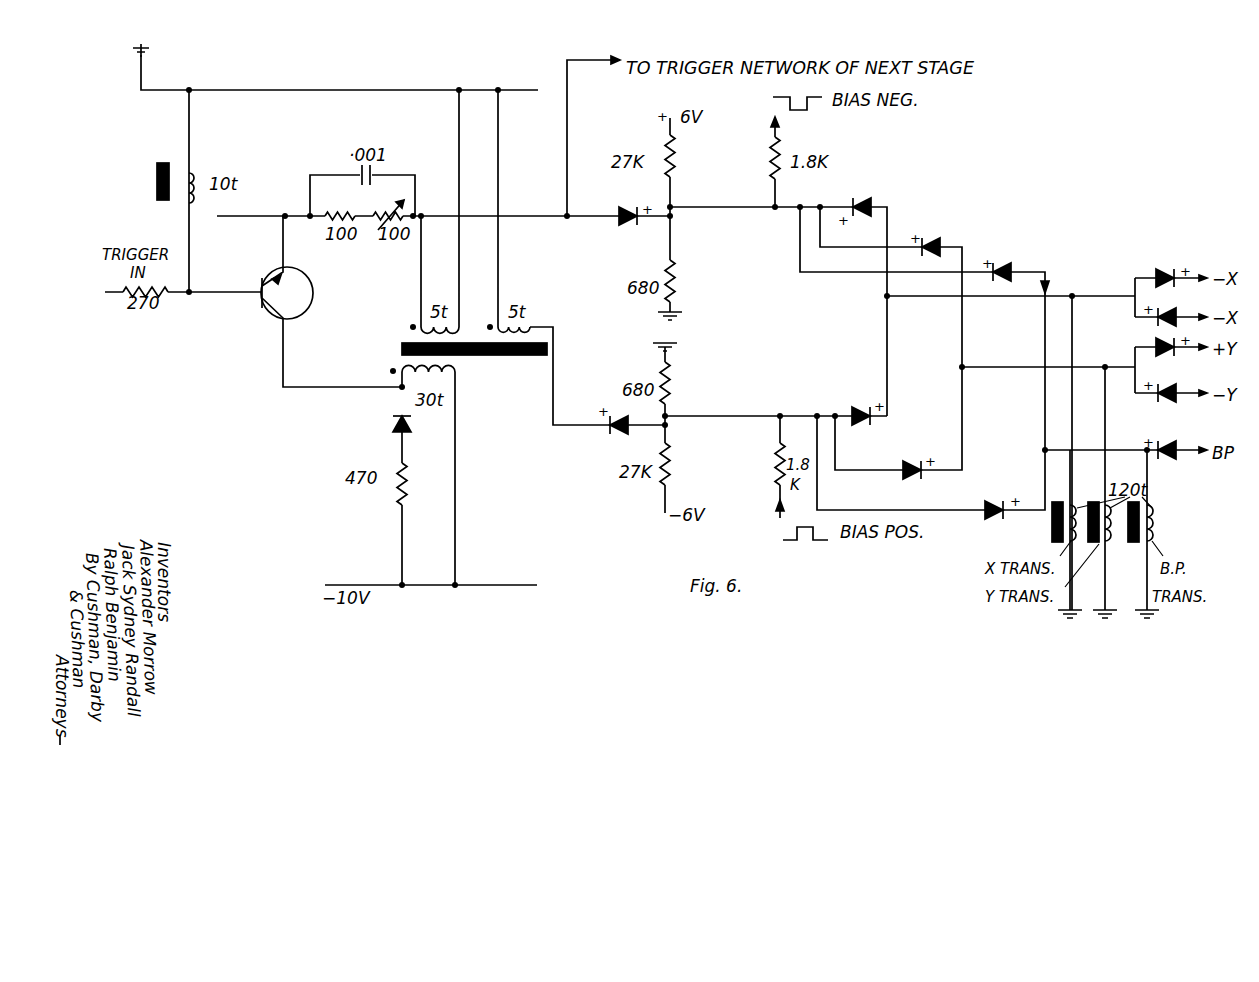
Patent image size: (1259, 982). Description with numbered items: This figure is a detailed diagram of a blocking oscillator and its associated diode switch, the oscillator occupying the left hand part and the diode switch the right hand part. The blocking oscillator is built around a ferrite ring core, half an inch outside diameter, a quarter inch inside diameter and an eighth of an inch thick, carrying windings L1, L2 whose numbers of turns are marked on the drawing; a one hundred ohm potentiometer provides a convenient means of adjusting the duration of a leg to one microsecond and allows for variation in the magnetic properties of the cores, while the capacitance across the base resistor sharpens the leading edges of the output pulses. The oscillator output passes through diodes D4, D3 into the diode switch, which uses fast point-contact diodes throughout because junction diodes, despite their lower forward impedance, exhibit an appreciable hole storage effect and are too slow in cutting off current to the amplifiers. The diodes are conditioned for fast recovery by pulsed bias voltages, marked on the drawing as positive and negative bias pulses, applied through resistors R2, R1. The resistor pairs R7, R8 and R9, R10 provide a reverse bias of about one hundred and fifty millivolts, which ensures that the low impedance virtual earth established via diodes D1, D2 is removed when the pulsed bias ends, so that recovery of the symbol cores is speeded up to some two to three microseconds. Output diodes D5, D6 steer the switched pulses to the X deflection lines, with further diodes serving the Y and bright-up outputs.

The resistor 1.8K (bias pos) R1 is at (763, 464).
The resistor 1.8K (bias neg) R2 is at (758, 158).
The resistor R7 is at (685, 156).
The resistor R8 is at (685, 281).
The resistor R9 is at (679, 383).
The resistor R10 is at (684, 464).
The diode D1 is at (908, 478).
The diode D2 is at (876, 198).
The diode D3 is at (623, 433).
The diode D4 is at (624, 227).
The diode (+X output) D5 is at (1167, 267).
The diode (-X output) D6 is at (1174, 307).
The transformer winding 5t L1 is at (529, 326).
The transformer winding 5t L2 is at (418, 326).